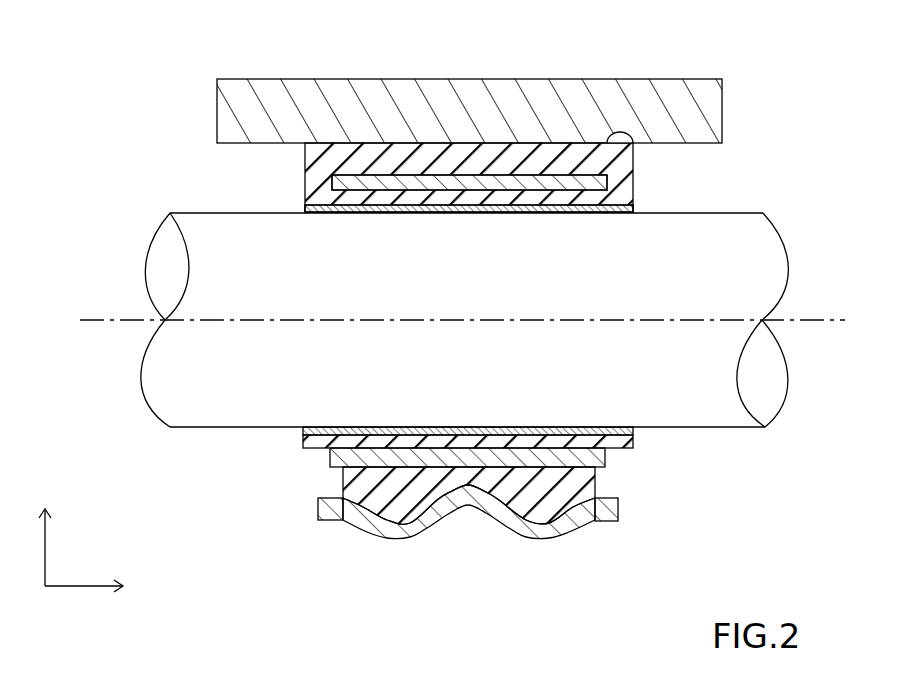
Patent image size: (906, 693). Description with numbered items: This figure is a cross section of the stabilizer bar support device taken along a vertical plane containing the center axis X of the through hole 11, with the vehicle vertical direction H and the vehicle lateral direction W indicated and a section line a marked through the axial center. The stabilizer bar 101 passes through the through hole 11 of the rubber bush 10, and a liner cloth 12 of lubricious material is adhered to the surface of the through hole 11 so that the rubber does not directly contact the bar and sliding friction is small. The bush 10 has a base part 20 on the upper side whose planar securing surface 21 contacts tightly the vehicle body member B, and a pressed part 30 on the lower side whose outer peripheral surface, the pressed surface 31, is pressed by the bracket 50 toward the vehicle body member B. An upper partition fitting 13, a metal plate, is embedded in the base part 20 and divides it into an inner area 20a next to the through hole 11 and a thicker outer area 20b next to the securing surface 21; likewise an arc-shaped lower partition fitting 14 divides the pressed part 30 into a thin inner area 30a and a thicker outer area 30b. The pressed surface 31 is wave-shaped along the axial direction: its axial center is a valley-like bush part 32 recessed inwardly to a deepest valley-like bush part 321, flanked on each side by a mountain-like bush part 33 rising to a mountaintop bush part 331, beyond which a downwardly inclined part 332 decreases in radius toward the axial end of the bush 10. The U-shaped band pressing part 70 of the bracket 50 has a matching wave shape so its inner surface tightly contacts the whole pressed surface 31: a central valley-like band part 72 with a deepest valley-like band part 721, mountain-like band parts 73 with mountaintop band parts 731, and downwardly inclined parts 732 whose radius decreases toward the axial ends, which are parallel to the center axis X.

The vehicle body member B is at (722, 113).
The planar securing surface 21 is at (632, 141).
The base part 20 is at (305, 184).
The inner area 20a is at (382, 200).
The outer area 20b is at (443, 165).
The upper partition fitting 13 is at (607, 185).
The through hole 11 is at (332, 213).
The stabilizer bar 101 is at (738, 213).
The center axis X is at (474, 321).
The section line a is at (470, 73).
The vehicle vertical direction H is at (46, 533).
The vehicle lateral direction W is at (98, 588).
The liner cloth 12 is at (636, 430).
The inner area 30a is at (383, 441).
The outer area 30b is at (438, 476).
The lower partition fitting 14 is at (330, 455).
The pressed part 30 is at (343, 485).
The bush 10 is at (600, 482).
The U-shaped band pressing part 70 is at (330, 520).
The bracket 50 is at (603, 530).
The downwardly inclined part 732 is at (340, 533).
The downwardly inclined part 332 is at (355, 535).
The mountain-like band part 73 is at (388, 535).
The mountain-like bush part 33 is at (407, 537).
The valley-like bush part 32 is at (435, 525).
The deepest valley-like band part 721 is at (457, 530).
The deepest valley-like bush part 321 is at (477, 508).
The valley-like band part 72 is at (493, 522).
The pressed surface 31 is at (520, 535).
The mountaintop band part 731 is at (543, 538).
The mountaintop bush part 331 is at (557, 538).